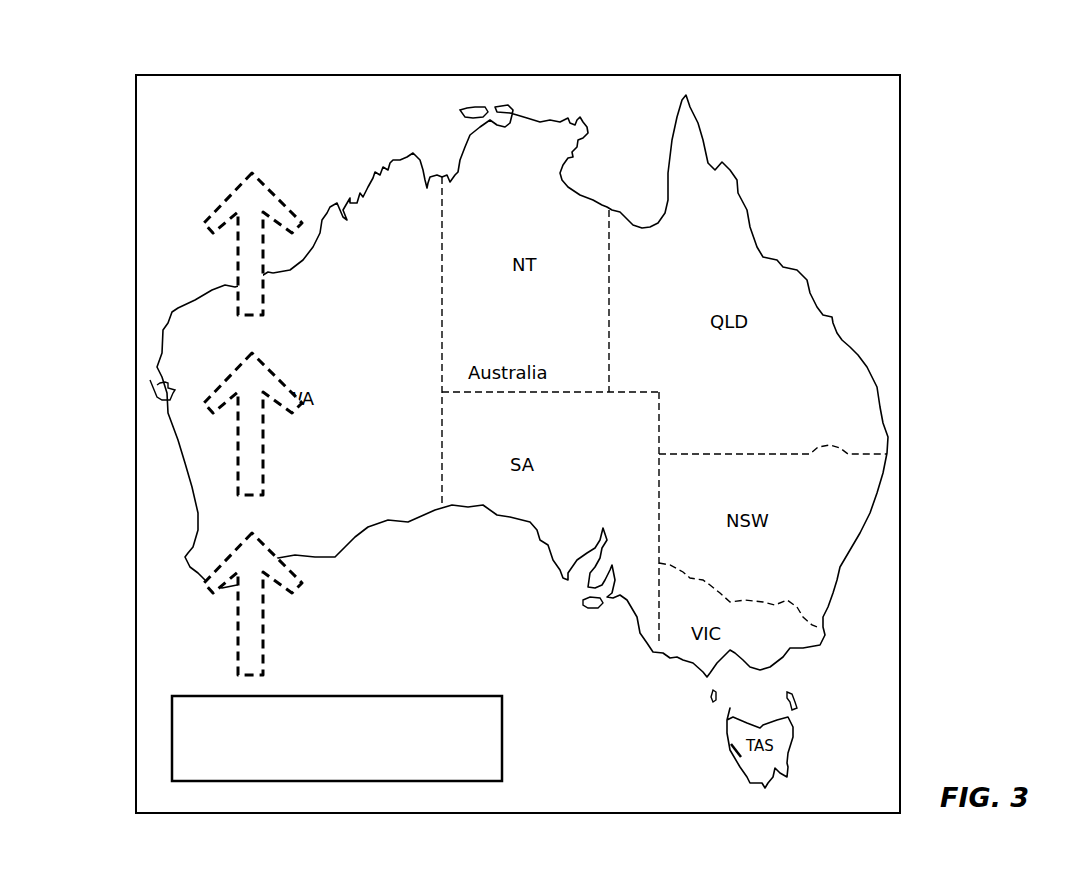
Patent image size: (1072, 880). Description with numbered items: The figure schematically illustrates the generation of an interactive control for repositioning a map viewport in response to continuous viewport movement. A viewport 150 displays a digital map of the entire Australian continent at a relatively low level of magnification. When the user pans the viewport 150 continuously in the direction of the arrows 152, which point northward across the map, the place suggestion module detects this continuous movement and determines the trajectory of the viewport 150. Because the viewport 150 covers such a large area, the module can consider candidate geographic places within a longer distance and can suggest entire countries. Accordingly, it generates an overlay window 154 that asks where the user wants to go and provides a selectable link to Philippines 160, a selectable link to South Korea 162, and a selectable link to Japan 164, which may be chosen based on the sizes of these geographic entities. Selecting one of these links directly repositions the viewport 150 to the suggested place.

The viewport 150 is at (792, 75).
The arrows 152 is at (207, 592).
The overlay window 154 is at (289, 772).
The selectable link to Philippines 160 is at (220, 775).
The selectable link to South Korea 162 is at (348, 775).
The selectable link to Japan 164 is at (463, 775).